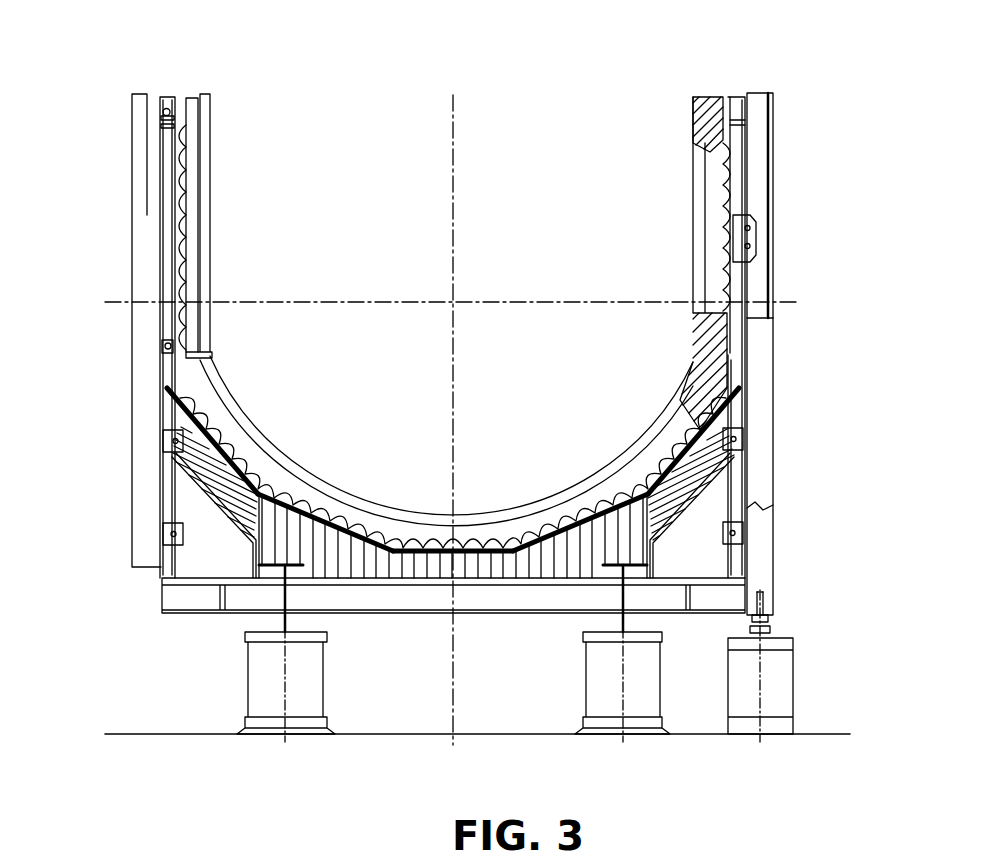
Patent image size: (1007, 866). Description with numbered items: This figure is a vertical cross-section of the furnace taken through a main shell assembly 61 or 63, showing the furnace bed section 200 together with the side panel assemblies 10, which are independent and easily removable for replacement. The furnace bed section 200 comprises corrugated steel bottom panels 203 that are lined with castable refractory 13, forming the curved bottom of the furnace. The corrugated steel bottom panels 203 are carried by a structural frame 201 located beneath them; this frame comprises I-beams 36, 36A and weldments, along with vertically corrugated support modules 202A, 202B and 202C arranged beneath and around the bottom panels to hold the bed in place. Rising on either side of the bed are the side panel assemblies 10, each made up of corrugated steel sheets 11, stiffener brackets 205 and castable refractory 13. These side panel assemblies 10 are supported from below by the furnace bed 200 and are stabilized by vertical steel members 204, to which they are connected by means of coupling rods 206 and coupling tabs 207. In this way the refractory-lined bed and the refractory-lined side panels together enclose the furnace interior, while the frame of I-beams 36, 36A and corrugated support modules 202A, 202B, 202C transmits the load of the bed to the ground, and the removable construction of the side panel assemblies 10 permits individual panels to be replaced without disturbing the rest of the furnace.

The side panel assembly 10 is at (212, 236).
The corrugated steel sheet 11 is at (185, 138).
The castable refractory 13 is at (195, 172).
The I-beam 36 is at (213, 605).
The I-beam 36A is at (246, 620).
The main shell assembly 61 is at (700, 96).
The main shell assembly 63 is at (197, 96).
The furnace bed section 200 is at (297, 462).
The structural frame 201 is at (477, 548).
The vertically corrugated support module 202A is at (200, 457).
The vertically corrugated support module 202B is at (338, 540).
The vertically corrugated support module 202C is at (417, 565).
The corrugated steel bottom panel 203 is at (288, 492).
The vertical steel member 204 is at (146, 146).
The stiffener bracket 205 is at (740, 155).
The coupling rod 206 is at (170, 205).
The coupling tab 207 is at (168, 112).